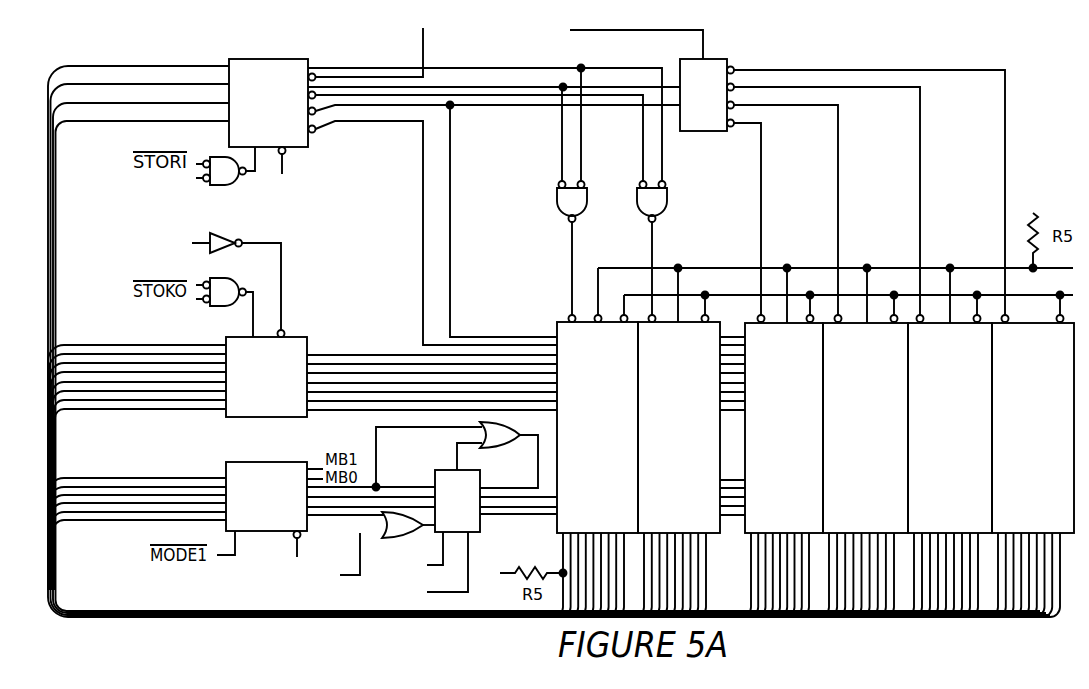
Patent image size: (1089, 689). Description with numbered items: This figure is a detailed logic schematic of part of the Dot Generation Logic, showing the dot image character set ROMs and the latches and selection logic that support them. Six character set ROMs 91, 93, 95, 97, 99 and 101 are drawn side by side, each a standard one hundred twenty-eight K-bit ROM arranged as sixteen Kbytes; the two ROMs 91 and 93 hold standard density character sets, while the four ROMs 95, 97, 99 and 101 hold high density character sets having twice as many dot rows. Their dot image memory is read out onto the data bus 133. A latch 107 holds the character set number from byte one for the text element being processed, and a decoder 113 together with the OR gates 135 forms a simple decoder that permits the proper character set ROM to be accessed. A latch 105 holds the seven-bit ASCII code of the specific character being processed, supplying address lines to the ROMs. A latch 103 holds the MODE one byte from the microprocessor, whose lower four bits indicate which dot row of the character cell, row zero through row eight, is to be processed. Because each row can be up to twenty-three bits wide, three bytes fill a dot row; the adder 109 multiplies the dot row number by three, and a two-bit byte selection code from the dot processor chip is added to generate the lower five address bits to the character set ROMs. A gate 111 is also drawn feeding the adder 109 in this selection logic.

The character set ROM 91 is at (597, 424).
The character set ROM 93 is at (679, 424).
The character set ROM 95 is at (784, 424).
The character set ROM 97 is at (865, 424).
The character set ROM 99 is at (950, 424).
The character set ROM 101 is at (1033, 424).
The latch 103 is at (266, 496).
The latch 105 is at (266, 377).
The latch 107 is at (272, 103).
The adder 109 is at (457, 501).
The OR gate 111 is at (408, 525).
The decoder 113 is at (707, 95).
The data bus 133 is at (301, 613).
The OR gates 135 is at (634, 203).